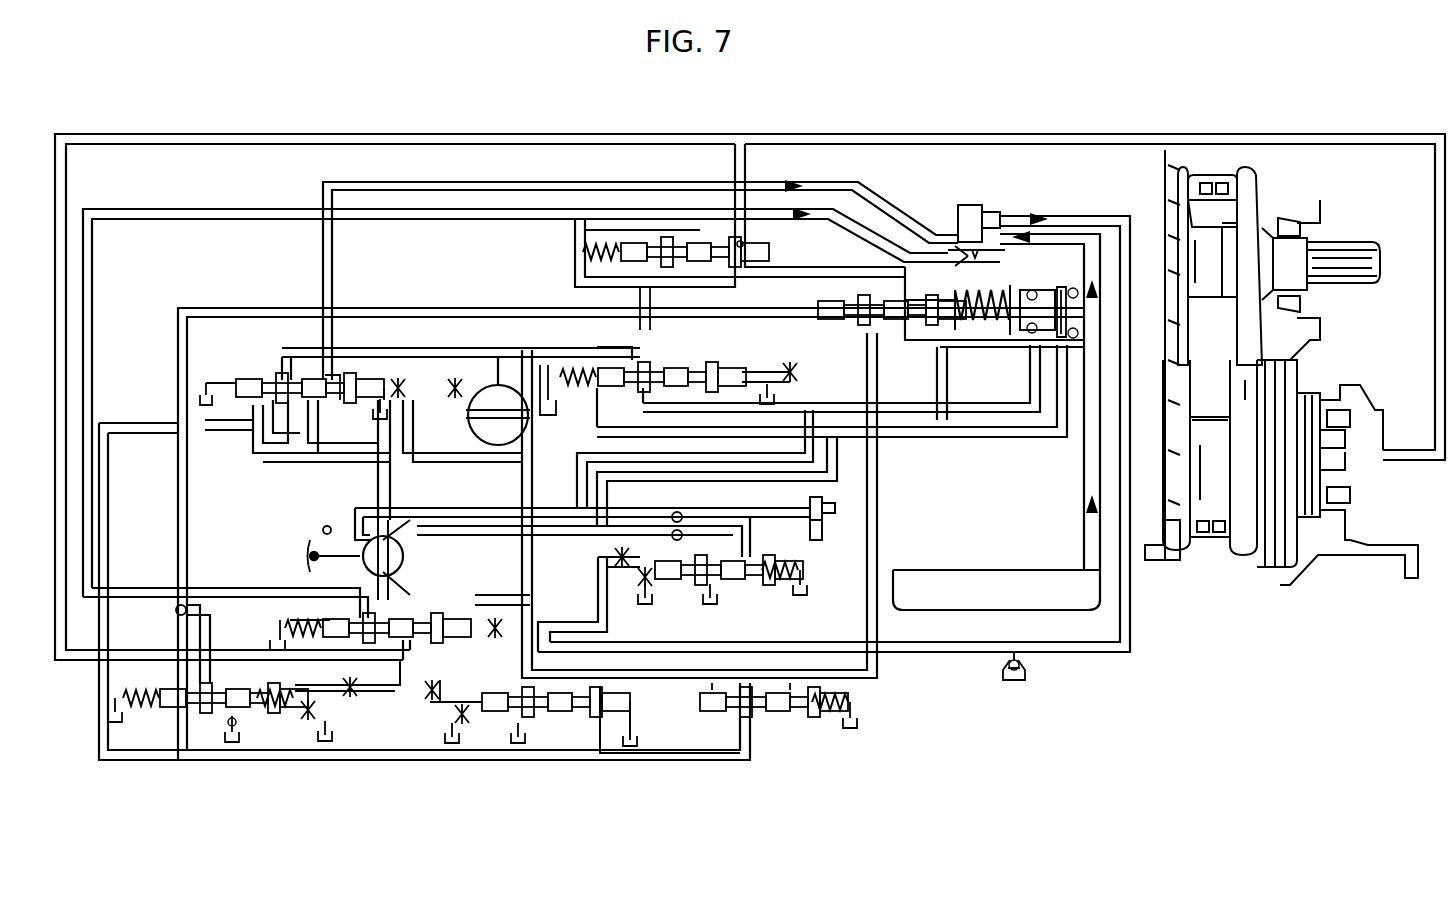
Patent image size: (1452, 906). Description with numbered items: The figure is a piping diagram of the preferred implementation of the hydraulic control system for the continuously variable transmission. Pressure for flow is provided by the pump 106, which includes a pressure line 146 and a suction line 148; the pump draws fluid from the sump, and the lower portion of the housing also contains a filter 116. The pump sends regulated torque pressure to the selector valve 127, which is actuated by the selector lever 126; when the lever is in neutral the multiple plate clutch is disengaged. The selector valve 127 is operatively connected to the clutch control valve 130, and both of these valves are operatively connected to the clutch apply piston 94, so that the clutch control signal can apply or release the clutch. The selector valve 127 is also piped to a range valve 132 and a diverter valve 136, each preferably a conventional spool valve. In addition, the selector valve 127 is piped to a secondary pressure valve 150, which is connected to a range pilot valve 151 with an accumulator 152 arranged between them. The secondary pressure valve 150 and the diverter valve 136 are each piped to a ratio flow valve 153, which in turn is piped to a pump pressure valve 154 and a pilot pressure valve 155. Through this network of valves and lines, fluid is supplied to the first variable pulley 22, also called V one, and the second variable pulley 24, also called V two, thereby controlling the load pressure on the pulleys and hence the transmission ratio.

The variable pulley 22 is at (1008, 262).
The variable pulley 24 is at (1365, 455).
The clutch apply piston 94 is at (838, 506).
The pump 106 is at (968, 215).
The filter 116 is at (962, 572).
The selector lever 126 is at (305, 556).
The selector valve 127 is at (405, 566).
The clutch control valve 130 is at (770, 588).
The range valve 132 is at (960, 350).
The diverter valve 136 is at (565, 256).
The pressure line 146 is at (1088, 220).
The suction line 148 is at (1040, 245).
The secondary pressure valve 150 is at (262, 378).
The range pilot valve 151 is at (668, 358).
The accumulator 152 is at (480, 390).
The ratio flow valve 153 is at (262, 705).
The pump pressure valve 154 is at (618, 690).
The pilot pressure valve 155 is at (866, 702).